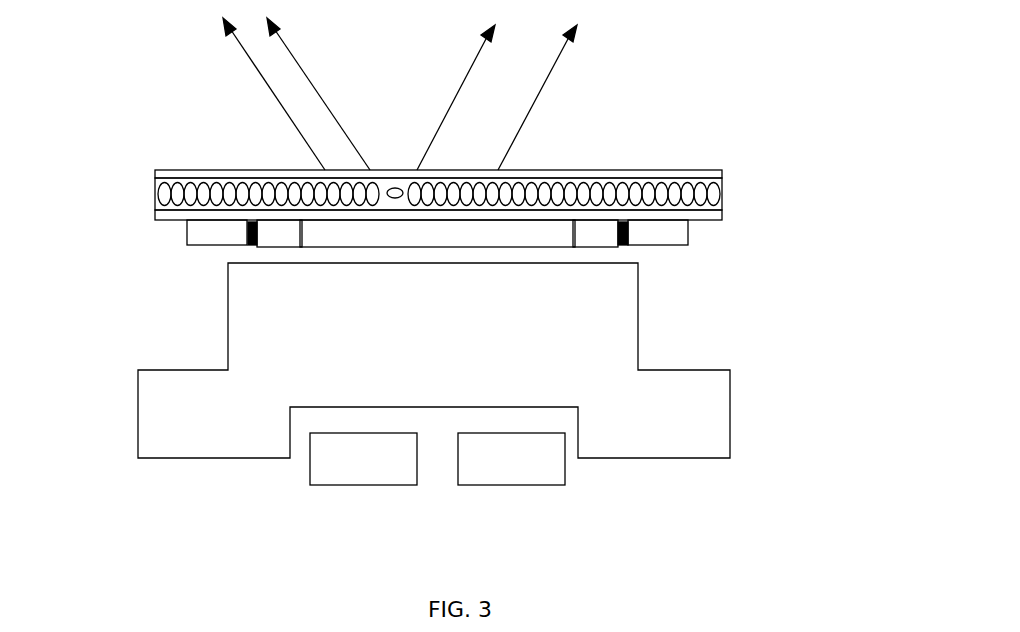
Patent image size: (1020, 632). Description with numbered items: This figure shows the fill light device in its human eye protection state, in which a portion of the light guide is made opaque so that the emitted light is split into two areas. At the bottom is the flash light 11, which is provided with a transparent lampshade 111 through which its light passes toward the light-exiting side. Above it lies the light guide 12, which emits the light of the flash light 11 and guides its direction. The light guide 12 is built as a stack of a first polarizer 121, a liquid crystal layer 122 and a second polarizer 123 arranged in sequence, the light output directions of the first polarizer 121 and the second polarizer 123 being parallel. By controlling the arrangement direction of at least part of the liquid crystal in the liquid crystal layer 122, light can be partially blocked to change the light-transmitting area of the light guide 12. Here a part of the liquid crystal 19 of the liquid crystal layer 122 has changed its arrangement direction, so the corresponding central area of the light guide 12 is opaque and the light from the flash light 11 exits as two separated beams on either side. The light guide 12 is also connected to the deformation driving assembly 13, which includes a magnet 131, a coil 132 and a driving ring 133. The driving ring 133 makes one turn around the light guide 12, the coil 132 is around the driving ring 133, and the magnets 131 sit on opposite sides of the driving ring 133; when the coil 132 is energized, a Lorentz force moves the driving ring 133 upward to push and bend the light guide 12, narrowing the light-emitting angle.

The flash light 11 is at (305, 490).
The transparent lampshade 111 is at (137, 372).
The light guide 12 is at (510, 152).
The first polarizer 121 is at (713, 169).
The liquid crystal layer 122 is at (720, 182).
The second polarizer 123 is at (480, 183).
The deformation driving assembly 13 is at (526, 253).
The magnet 131 is at (689, 236).
The coil 132 is at (622, 246).
The driving ring 133 is at (628, 248).
The liquid crystal 19 is at (396, 188).